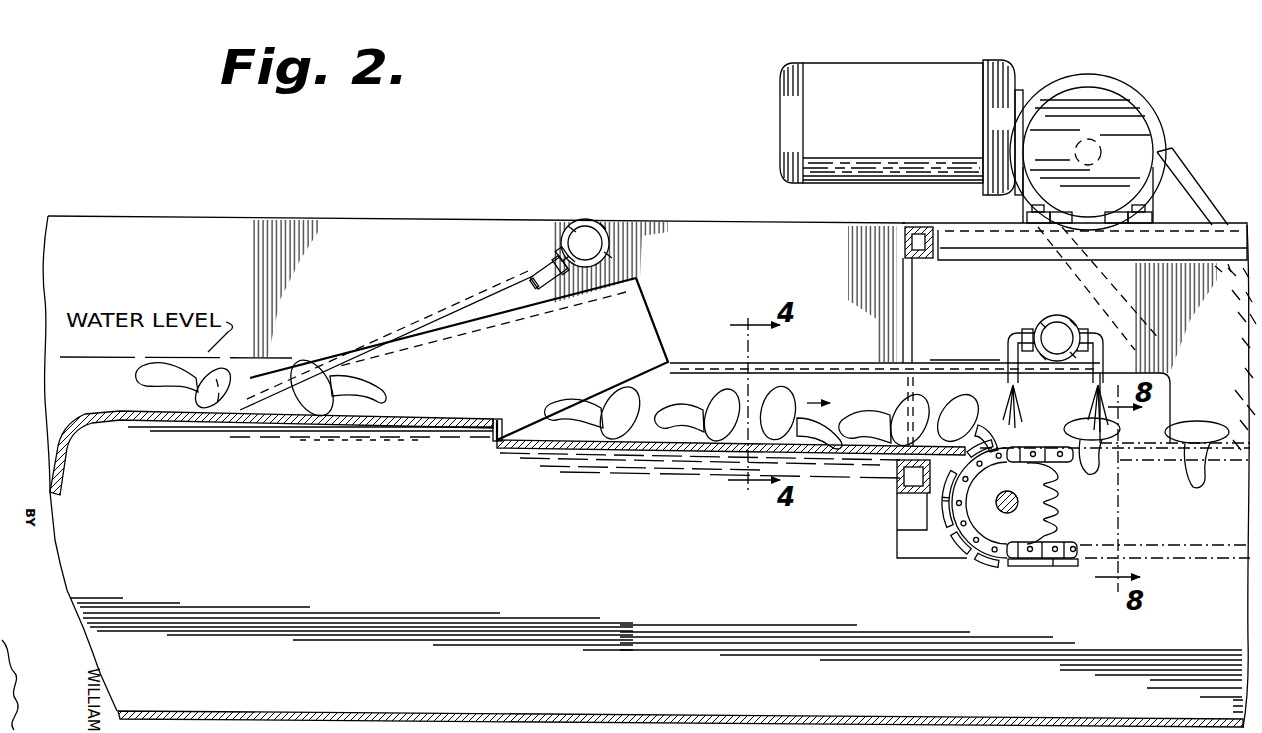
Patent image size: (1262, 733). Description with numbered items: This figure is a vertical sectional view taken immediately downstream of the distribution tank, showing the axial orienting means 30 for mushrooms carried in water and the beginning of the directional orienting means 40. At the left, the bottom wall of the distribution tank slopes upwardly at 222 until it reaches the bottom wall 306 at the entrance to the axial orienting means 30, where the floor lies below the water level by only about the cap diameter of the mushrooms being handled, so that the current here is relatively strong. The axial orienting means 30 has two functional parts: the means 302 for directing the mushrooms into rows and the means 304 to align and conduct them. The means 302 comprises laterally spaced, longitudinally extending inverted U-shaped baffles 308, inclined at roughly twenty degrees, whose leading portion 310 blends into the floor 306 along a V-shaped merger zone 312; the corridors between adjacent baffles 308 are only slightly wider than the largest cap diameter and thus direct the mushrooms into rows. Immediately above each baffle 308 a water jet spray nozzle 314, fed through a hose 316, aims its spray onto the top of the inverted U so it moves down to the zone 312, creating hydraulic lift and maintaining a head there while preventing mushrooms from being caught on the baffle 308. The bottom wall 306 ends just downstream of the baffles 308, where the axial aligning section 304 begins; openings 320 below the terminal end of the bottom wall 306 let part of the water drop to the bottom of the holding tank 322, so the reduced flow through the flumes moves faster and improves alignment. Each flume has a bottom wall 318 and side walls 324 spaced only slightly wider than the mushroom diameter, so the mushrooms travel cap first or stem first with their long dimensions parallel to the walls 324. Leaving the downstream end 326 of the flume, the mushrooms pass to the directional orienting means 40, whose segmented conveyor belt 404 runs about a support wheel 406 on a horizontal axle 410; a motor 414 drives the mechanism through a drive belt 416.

The axial orienting means 30 is at (639, 208).
The directional orienting means 40 is at (1070, 643).
The upwardly sloping bottom wall 222 is at (73, 460).
The means for directing the mushrooms into rows 302 is at (335, 460).
The means to align and conduct the mushrooms 304 is at (676, 458).
The bottom wall 306 is at (180, 422).
The inverted U-shaped baffle 308 is at (510, 386).
The leading portion of the baffle 310 is at (262, 403).
The V-shaped merger zone 312 is at (242, 433).
The water jet spray nozzle 314 is at (543, 262).
The hose 316 is at (588, 221).
The flume bottom wall 318 is at (573, 446).
The opening 320 is at (488, 442).
The holding tank 322 is at (388, 710).
The flume side wall 324 is at (677, 373).
The downstream end of the flume 326 is at (990, 350).
The segmented conveyor belt 404 is at (1023, 565).
The support wheel 406 is at (987, 527).
The horizontal axle 410 is at (1017, 507).
The motor 414 is at (877, 127).
The drive belt 416 is at (1195, 192).